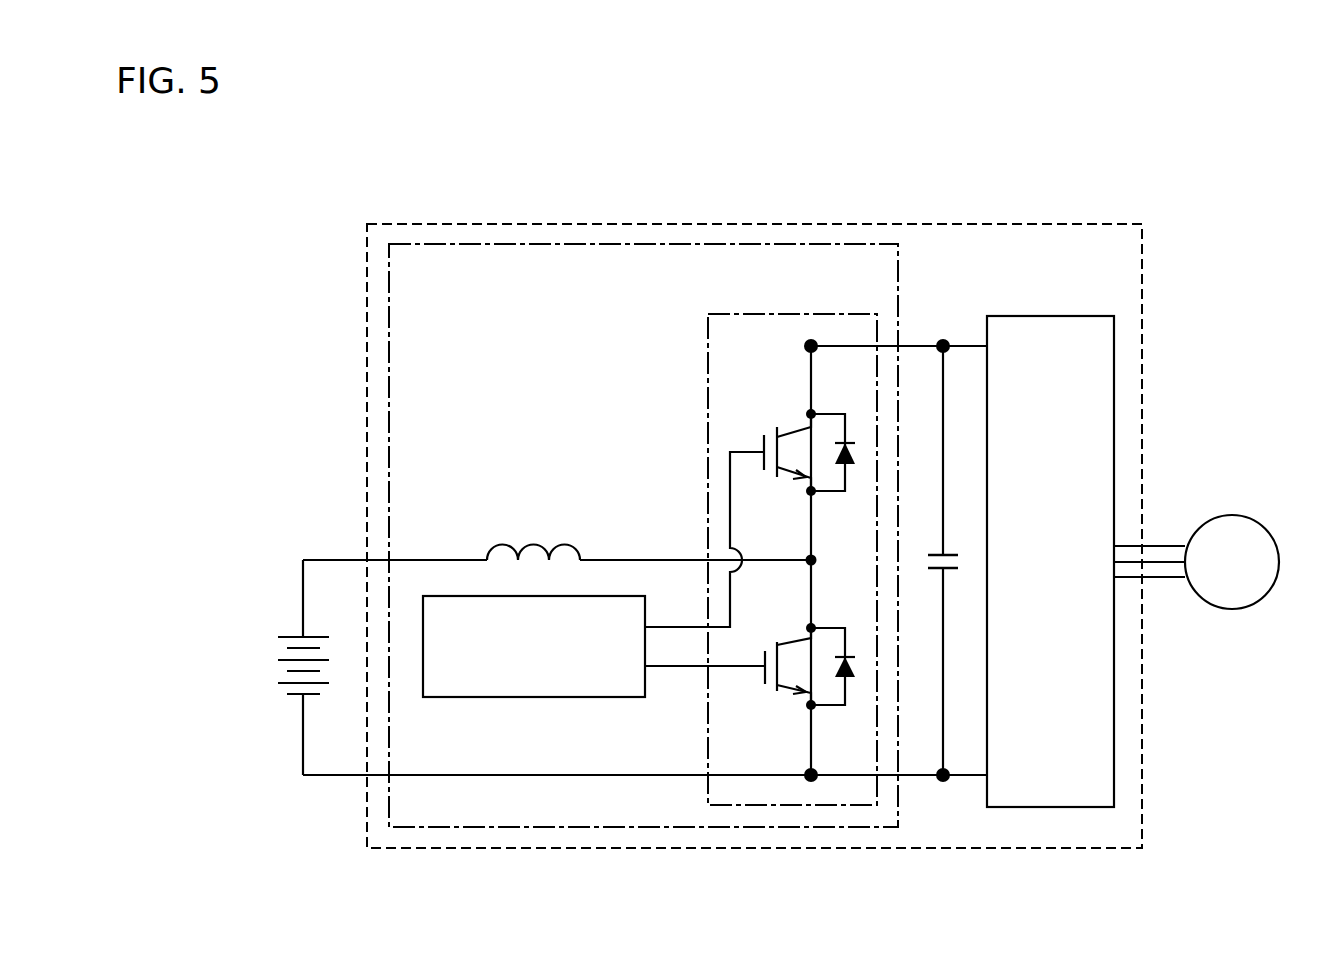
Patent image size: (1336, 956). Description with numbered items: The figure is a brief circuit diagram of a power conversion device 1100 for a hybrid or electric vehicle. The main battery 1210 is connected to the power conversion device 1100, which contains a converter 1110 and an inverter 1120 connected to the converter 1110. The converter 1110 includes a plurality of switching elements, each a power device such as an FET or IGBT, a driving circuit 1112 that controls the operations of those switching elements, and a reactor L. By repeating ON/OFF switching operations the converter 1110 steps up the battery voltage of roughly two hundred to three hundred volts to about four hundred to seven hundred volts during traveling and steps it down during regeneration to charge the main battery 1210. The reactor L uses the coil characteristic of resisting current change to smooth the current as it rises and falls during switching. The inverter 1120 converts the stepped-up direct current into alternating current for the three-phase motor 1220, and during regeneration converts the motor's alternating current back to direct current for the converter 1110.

The power conversion device 1100 is at (367, 278).
The converter 1110 is at (899, 272).
The driving circuit 1112 is at (460, 698).
The inverter 1120 is at (1085, 316).
The main battery 1210 is at (278, 648).
The motor 1220 is at (1257, 517).
The reactor L is at (563, 545).